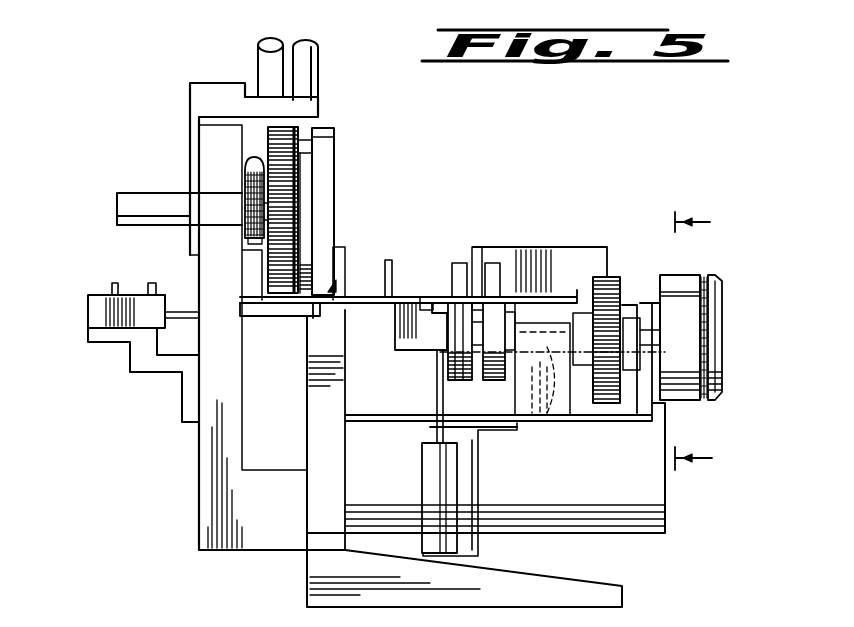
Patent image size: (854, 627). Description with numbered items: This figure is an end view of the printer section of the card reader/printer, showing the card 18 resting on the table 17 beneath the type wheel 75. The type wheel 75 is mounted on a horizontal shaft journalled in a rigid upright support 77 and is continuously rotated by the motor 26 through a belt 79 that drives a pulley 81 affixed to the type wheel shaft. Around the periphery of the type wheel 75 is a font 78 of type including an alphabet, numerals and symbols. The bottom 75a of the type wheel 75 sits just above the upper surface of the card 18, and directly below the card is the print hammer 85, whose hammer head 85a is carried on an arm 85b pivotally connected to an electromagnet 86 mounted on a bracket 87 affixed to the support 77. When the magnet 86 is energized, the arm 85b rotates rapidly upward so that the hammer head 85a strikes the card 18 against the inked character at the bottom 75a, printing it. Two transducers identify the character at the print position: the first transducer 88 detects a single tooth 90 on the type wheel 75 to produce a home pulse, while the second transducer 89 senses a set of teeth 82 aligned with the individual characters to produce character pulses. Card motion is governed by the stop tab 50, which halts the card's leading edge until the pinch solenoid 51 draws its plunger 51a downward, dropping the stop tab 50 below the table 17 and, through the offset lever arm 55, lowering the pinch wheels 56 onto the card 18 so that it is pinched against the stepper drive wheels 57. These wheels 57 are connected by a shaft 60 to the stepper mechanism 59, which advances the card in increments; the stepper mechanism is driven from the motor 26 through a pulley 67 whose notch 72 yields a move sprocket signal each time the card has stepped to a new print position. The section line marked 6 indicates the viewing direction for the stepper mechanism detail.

The upright support 77 is at (203, 264).
The second transducer 89 is at (262, 62).
The first transducer 88 is at (318, 70).
The belt 79 is at (245, 196).
The pulley 81 is at (255, 168).
The set of teeth 82 is at (290, 207).
The type wheel 75 is at (335, 173).
The font 78 is at (324, 133).
The single tooth 90 is at (314, 144).
The bottom of the type wheel 75a is at (332, 291).
The print hammer 85 is at (340, 322).
The arm 85b is at (262, 318).
The hammer head 85a is at (314, 366).
The table 17 is at (428, 295).
The card 18 is at (560, 295).
The electromagnet 86 is at (92, 310).
The bracket 87 is at (161, 376).
The stop tab 50 is at (425, 325).
The plunger 51a is at (436, 437).
The pinch solenoid 51 is at (445, 490).
The pinch wheels 56 is at (491, 264).
The stepper drive wheels 57 is at (500, 380).
The shaft 60 is at (548, 430).
The offset lever arm 55 is at (603, 277).
The stepper mechanism 59 is at (728, 308).
The gap or notch 72 is at (690, 296).
The pulley 67 is at (712, 379).
The motor 26 is at (585, 530).
The section line 6- 6 is at (709, 342).